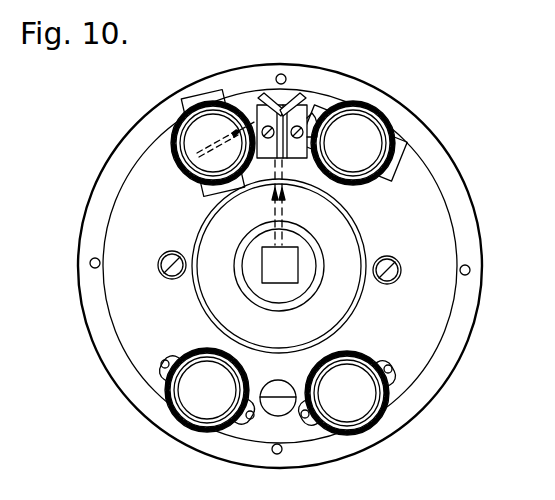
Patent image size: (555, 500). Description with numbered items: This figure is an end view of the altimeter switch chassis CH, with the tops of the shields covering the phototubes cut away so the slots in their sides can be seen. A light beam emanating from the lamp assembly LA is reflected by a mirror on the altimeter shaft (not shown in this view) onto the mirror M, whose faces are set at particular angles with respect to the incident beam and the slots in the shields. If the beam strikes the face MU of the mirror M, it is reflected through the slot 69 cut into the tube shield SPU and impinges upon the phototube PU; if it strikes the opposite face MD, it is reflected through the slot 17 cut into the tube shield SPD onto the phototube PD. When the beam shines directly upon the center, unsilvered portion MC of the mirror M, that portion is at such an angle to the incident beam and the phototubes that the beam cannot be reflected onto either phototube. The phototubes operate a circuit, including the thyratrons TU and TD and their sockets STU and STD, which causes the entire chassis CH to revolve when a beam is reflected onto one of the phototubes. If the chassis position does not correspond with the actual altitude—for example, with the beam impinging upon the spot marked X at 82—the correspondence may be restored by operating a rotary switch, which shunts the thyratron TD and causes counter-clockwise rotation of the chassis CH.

The chassis CH is at (468, 188).
The lamp assembly LA is at (200, 292).
The thyratron TU is at (231, 373).
The thyratron TD is at (365, 360).
The upper socket STU is at (200, 348).
The lower socket STD is at (350, 353).
The tube shield SPD is at (173, 163).
The tube shield SPU is at (352, 173).
The phototube PD is at (192, 163).
The phototube PU is at (352, 188).
The mirror M is at (283, 110).
The face of mirror MD is at (253, 70).
The face of mirror MU is at (314, 117).
The center unsilvered portion of mirror MC is at (323, 103).
The slot 17 is at (245, 125).
The slot 69 is at (316, 126).
The spot 82 is at (130, 235).
The spot mark X is at (134, 238).